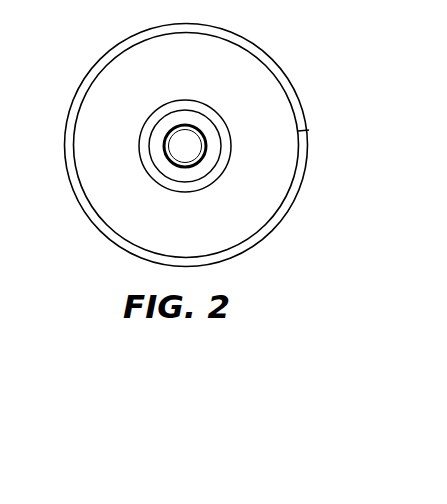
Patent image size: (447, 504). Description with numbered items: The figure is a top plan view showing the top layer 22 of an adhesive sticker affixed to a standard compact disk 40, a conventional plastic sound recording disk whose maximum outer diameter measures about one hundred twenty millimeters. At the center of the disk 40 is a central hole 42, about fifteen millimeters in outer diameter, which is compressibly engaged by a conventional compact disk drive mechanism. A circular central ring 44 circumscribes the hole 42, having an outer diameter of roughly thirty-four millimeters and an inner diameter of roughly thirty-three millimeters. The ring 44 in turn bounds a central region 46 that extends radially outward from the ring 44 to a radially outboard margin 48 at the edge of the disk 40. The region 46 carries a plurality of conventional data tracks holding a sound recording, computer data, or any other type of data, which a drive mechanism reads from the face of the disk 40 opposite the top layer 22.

The compact disk 40 is at (86, 68).
The radially outboard margin 48 is at (309, 130).
The top layer 22 is at (185, 112).
The central hole 42 is at (163, 143).
The circular central ring 44 is at (147, 171).
The central region 46 is at (229, 218).